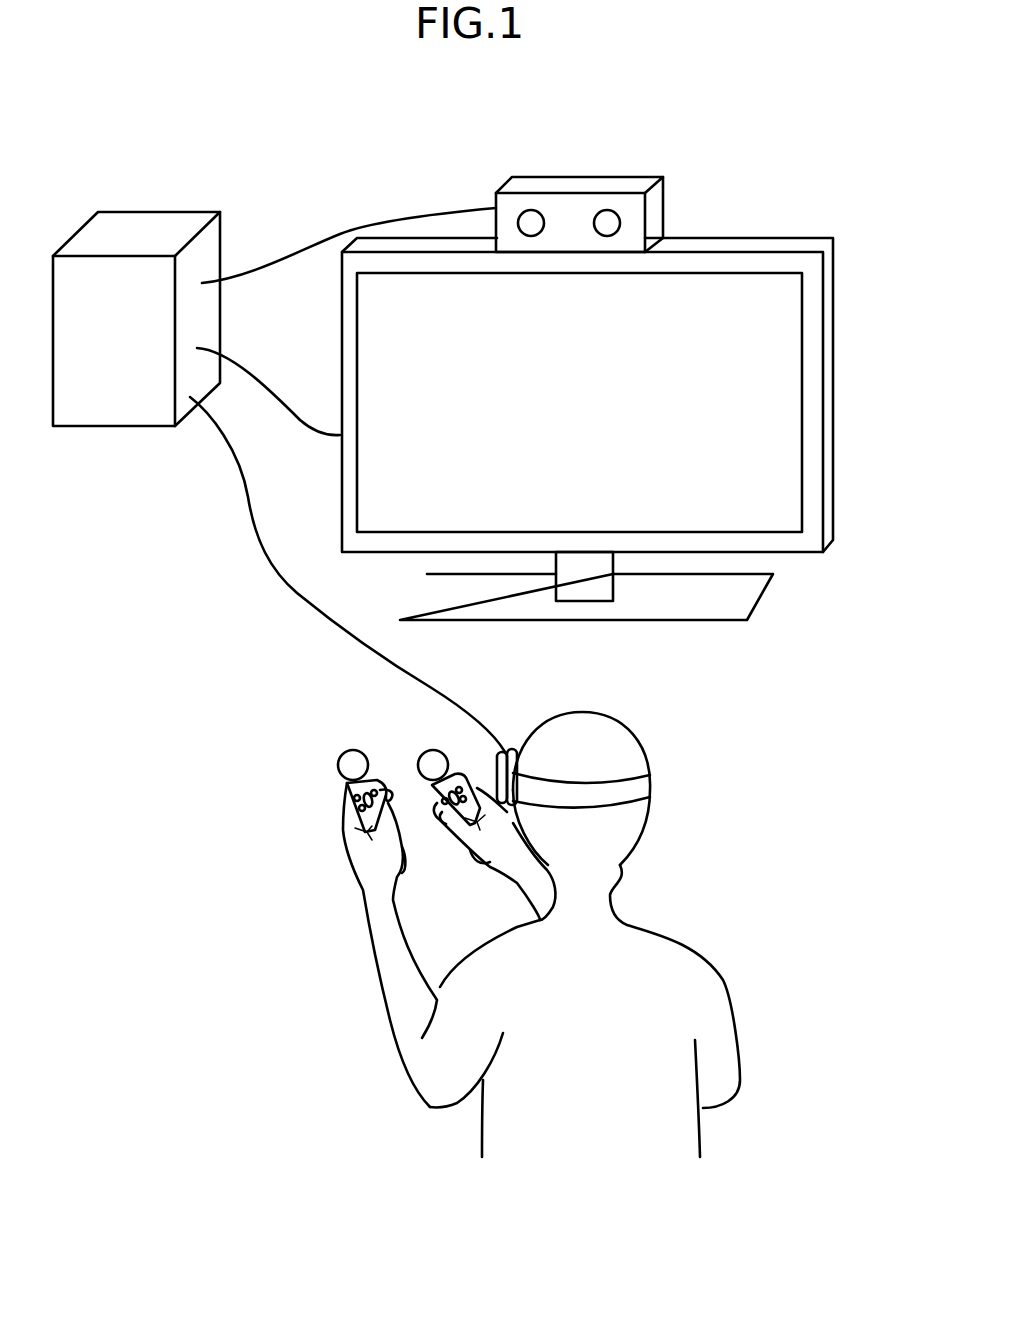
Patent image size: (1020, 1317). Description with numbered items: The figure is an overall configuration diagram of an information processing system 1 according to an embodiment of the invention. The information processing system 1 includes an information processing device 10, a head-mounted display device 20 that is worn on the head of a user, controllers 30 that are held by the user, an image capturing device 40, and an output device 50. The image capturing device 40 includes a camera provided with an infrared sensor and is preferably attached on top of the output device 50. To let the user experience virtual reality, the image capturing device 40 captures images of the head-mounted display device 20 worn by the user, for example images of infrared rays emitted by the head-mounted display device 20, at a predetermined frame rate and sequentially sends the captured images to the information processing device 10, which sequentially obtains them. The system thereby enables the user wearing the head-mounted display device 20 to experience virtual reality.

The information processing system 1 is at (789, 128).
The information processing device 10 is at (163, 212).
The head-mounted display device 20 is at (650, 776).
The controllers 30 is at (430, 750).
The image capturing device 40 is at (588, 177).
The output device 50 is at (742, 238).